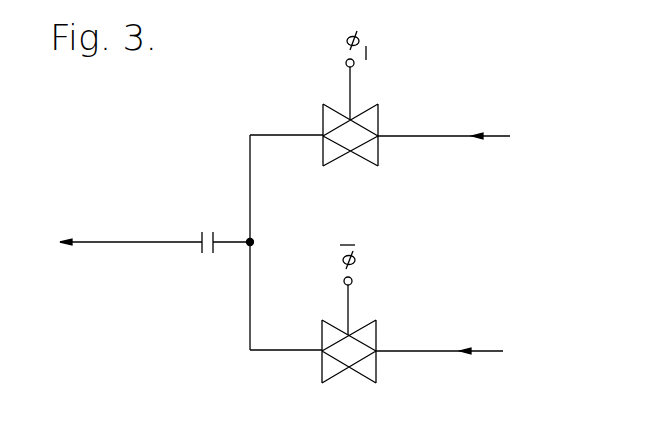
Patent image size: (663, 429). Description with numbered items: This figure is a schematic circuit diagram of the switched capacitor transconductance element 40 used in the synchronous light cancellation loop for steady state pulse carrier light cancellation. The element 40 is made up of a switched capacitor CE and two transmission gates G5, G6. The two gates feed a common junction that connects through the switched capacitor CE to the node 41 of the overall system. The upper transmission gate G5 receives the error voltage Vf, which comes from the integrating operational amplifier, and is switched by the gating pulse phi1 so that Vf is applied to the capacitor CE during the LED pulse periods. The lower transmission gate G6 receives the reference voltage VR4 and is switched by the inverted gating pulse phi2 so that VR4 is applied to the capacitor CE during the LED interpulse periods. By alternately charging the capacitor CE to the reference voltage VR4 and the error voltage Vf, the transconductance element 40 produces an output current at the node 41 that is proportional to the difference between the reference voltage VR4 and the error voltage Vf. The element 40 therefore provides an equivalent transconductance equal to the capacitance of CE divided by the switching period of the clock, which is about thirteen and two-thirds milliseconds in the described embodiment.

The switched capacitor transconductance element 40 is at (199, 346).
The node 41 is at (131, 243).
The switched capacitor CE is at (226, 260).
The transmission gate G5 is at (368, 122).
The transmission gate G6 is at (367, 336).
The switching or gating pulse phi1 is at (356, 45).
The switching or gating pulse phi2 is at (353, 262).
The error voltage Vf is at (460, 140).
The reference voltage VR4 is at (461, 361).